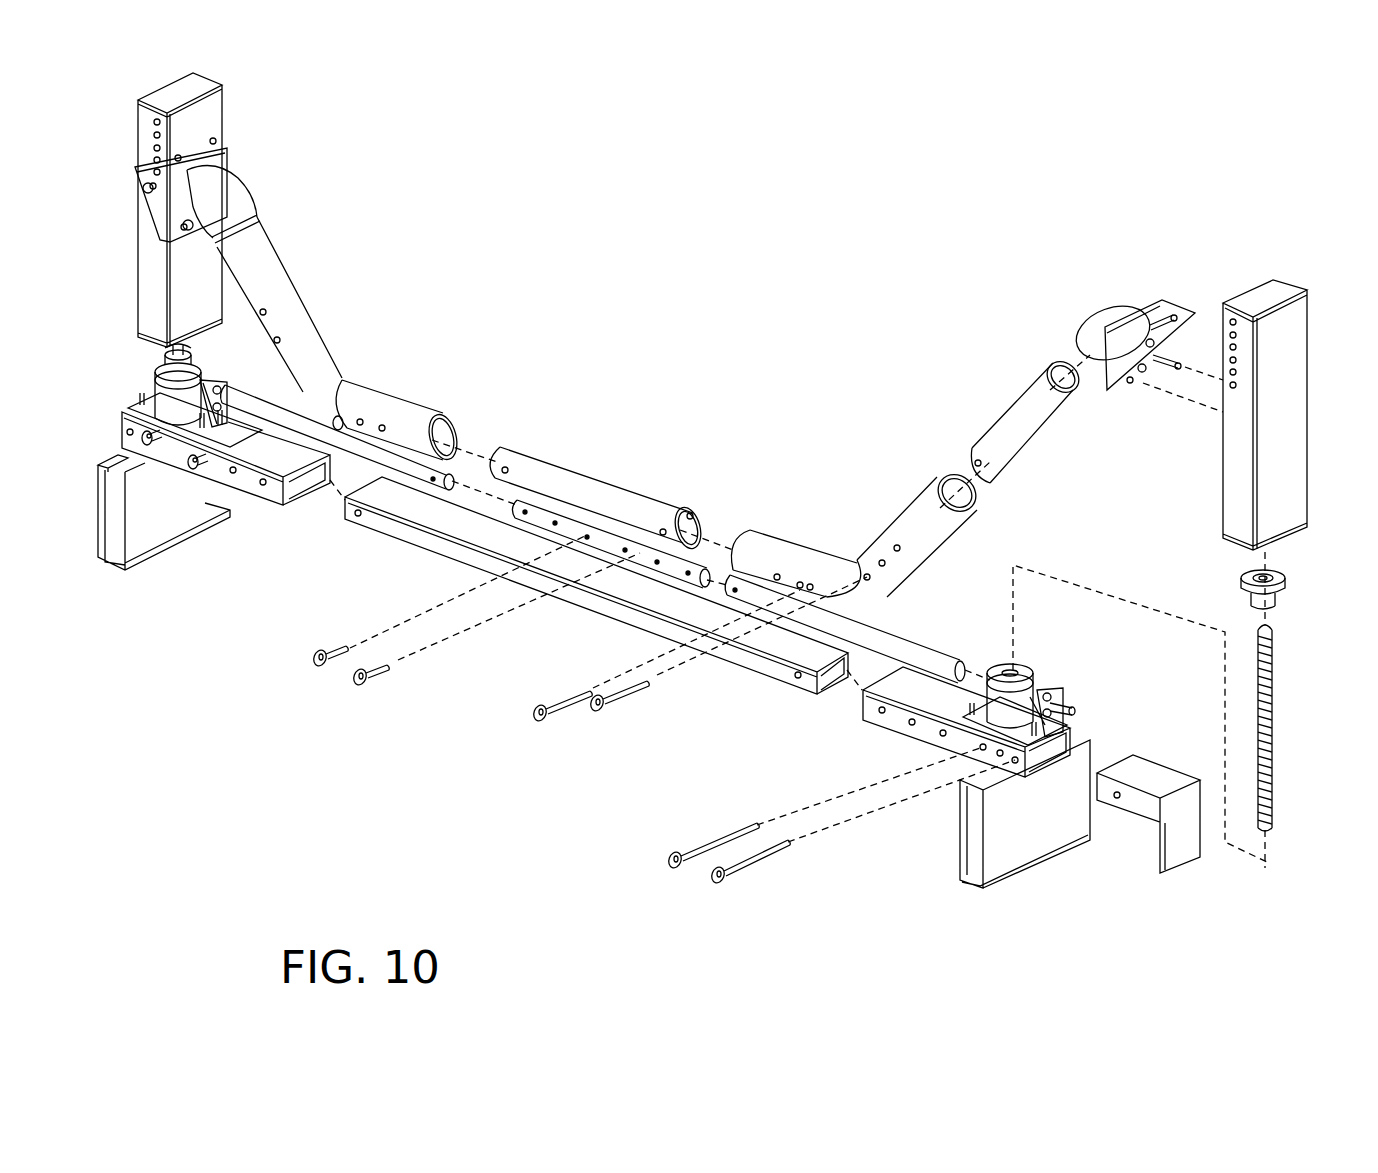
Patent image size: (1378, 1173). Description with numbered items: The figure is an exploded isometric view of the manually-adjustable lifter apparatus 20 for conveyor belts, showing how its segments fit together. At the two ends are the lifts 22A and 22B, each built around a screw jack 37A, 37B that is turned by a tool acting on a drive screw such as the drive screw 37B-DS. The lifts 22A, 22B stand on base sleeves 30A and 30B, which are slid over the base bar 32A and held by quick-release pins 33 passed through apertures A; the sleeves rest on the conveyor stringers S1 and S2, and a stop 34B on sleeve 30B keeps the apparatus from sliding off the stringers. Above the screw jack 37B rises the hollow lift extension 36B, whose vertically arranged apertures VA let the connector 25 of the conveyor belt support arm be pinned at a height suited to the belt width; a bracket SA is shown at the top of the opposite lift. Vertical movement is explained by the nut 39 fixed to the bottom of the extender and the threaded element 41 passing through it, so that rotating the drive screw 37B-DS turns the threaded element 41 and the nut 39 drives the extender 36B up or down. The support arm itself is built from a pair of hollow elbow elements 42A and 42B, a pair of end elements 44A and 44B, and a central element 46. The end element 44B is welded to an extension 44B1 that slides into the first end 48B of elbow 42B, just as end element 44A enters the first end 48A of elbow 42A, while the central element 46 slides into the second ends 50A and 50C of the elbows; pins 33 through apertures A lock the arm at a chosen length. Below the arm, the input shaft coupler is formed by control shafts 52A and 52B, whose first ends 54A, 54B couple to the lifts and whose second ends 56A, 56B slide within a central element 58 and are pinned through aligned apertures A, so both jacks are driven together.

The adjustable lifter apparatus 20 is at (822, 285).
The lift 22A is at (92, 113).
The lift 22B is at (1317, 280).
The connector 25 is at (1162, 300).
The base sleeve 30A is at (247, 480).
The base sleeve 30B is at (867, 713).
The base bar 32A is at (585, 597).
The quick-release pins 33 is at (355, 685).
The stop 34B is at (1182, 840).
The lift extension 36B is at (1280, 378).
The screw jack 37A is at (138, 383).
The screw jack 37B is at (1056, 674).
The drive screw 37B-DS is at (1074, 712).
The nut 39 is at (1248, 580).
The threaded element 41 is at (1258, 660).
The elbow element 42A is at (380, 392).
The elbow element 42B is at (903, 512).
The end element 44A is at (223, 197).
The end element 44B is at (1100, 325).
The extension 44B1 is at (1012, 403).
The central element 46 is at (620, 492).
The first end 48A is at (247, 233).
The first end 48B is at (947, 473).
The second end 50A is at (455, 428).
The third open end 50C is at (742, 533).
The control shaft 52A is at (357, 447).
The control shaft 52B is at (887, 640).
The first end 54A is at (248, 405).
The first end 54B is at (975, 648).
The second end 56A is at (498, 462).
The second end 56B is at (727, 573).
The central element 58 is at (643, 553).
The apertures A is at (522, 513).
The stringer S1 is at (97, 540).
The stringer S2 is at (1038, 833).
The support bracket SA is at (180, 156).
The apertures VA is at (154, 148).